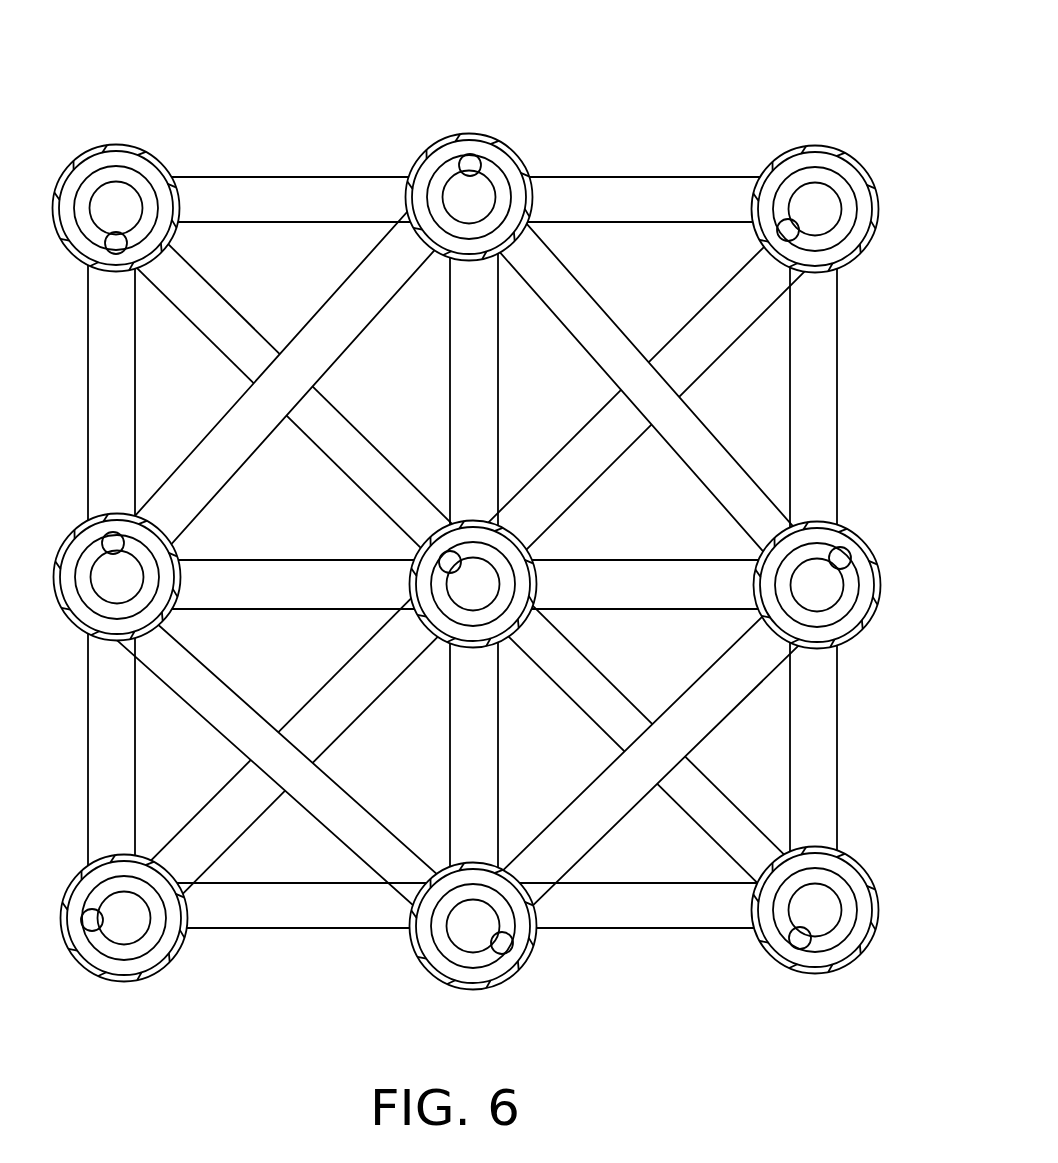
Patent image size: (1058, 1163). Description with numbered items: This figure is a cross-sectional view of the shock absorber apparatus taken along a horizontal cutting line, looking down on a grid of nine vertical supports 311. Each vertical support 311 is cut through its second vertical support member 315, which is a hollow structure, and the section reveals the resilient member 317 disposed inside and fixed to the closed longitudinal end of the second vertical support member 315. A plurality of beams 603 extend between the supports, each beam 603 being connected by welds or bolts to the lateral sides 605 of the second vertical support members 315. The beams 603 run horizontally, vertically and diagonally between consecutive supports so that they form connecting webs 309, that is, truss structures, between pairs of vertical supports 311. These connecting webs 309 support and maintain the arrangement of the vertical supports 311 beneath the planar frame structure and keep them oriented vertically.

The connecting webs 309 is at (253, 93).
The vertical supports 311 is at (520, 147).
The resilient member 317 is at (443, 177).
The second vertical support member 315 is at (870, 185).
The lateral sides 605 is at (818, 272).
The beams 603 is at (822, 463).